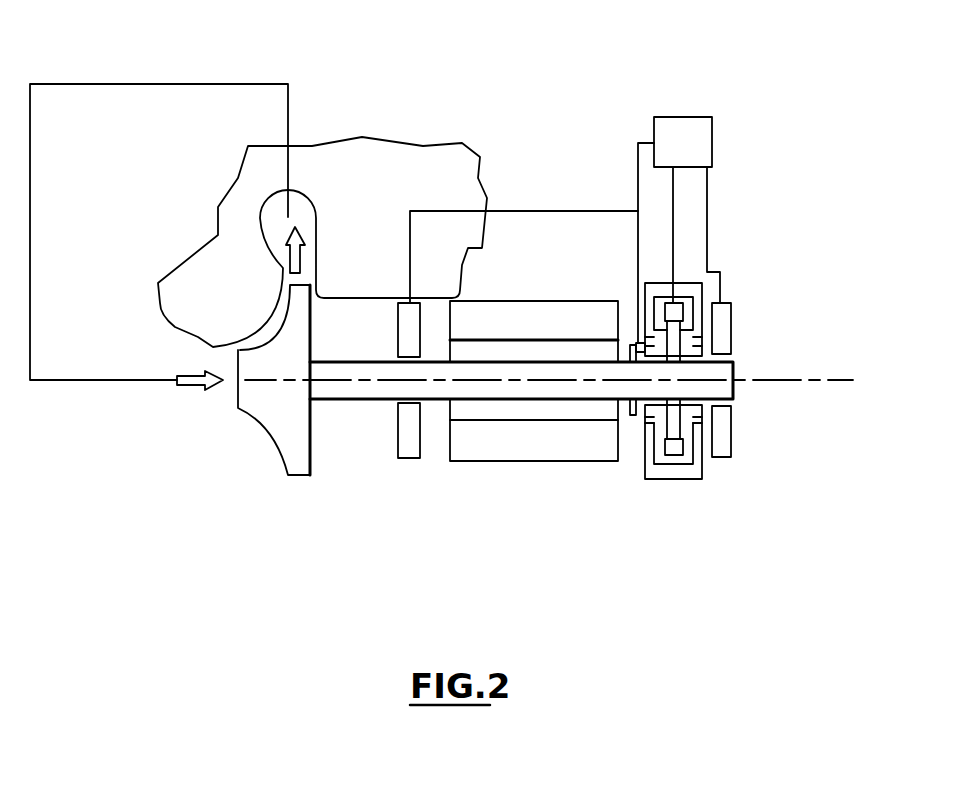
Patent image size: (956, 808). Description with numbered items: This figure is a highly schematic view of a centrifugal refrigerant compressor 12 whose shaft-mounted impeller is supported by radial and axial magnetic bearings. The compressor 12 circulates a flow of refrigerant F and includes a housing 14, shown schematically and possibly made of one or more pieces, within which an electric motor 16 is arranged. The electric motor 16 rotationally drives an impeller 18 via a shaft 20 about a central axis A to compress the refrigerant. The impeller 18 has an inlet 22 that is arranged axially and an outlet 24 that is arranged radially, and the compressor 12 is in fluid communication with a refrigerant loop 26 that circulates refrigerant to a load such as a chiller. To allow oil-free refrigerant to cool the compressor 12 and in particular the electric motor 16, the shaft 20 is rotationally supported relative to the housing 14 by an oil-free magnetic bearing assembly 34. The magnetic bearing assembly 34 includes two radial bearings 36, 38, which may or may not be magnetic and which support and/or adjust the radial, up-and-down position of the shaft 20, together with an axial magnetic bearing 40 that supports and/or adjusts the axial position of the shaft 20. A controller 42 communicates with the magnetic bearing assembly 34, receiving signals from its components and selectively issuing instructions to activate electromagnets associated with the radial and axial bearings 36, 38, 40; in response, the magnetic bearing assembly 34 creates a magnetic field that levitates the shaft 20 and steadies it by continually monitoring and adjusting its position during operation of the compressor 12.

The centrifugal refrigerant compressor 12 is at (183, 209).
The housing 14 is at (370, 163).
The electric motor 16 is at (530, 300).
The impeller 18 is at (272, 402).
The shaft 20 is at (371, 392).
The inlet 22 is at (232, 398).
The outlet 24 is at (305, 283).
The refrigerant loop 26 is at (237, 84).
The magnetic bearing assembly 34 is at (720, 264).
The radial bearing 36 is at (410, 450).
The radial bearing 38 is at (718, 452).
The axial magnetic bearing 40 is at (667, 484).
The controller 42 is at (700, 157).